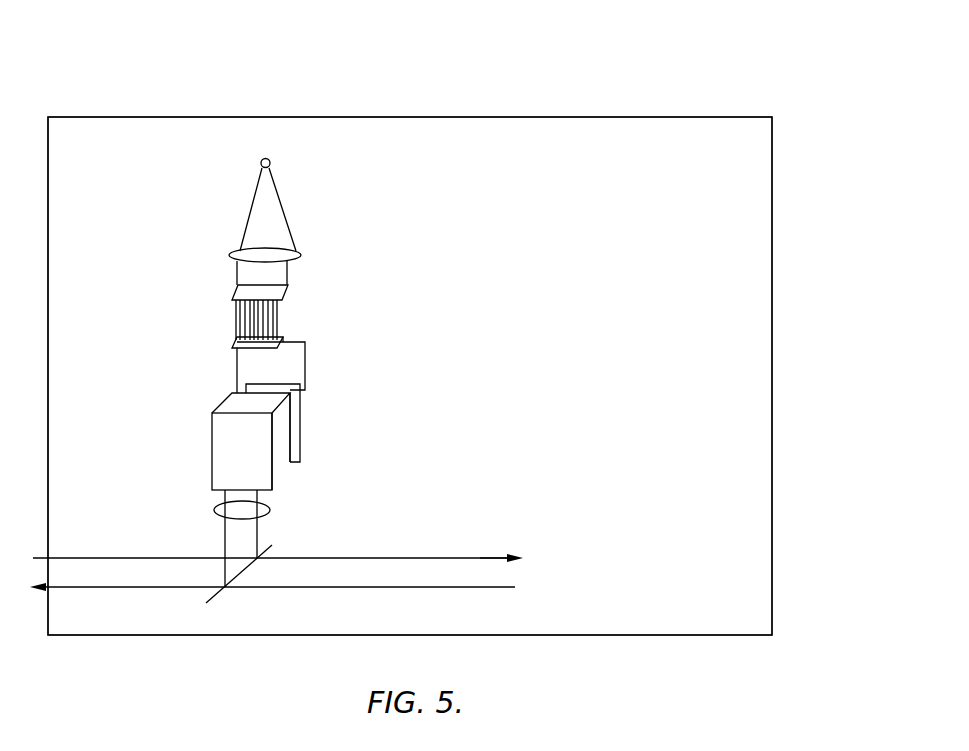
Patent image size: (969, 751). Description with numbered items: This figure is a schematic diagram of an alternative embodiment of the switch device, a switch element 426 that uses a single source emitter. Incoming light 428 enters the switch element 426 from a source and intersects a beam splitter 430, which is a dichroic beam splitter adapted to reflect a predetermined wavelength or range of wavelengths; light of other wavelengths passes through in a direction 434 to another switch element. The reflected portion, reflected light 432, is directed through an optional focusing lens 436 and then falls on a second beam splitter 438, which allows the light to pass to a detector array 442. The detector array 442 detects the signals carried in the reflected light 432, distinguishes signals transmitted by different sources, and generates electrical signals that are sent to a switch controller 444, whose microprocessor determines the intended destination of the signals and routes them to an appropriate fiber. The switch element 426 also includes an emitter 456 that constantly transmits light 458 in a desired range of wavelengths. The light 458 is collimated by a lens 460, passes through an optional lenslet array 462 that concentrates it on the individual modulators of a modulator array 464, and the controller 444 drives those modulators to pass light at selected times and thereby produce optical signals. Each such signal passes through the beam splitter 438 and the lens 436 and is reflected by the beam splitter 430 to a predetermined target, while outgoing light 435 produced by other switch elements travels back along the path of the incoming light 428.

The switch element 426 is at (602, 72).
The incoming light 428 is at (128, 558).
The beam splitter 430 is at (208, 603).
The reflected light 432 is at (258, 532).
The movement direction 434 is at (487, 558).
The outgoing light 435 is at (68, 587).
The focusing lens 436 is at (213, 510).
The beam splitter 438 is at (213, 492).
The detector array 442 is at (292, 467).
The switch controller 444 is at (318, 413).
The emitter 456 is at (285, 165).
The light 458 is at (283, 218).
The lens 460 is at (299, 253).
The lenslet array 462 is at (288, 290).
The modulator array 464 is at (282, 337).